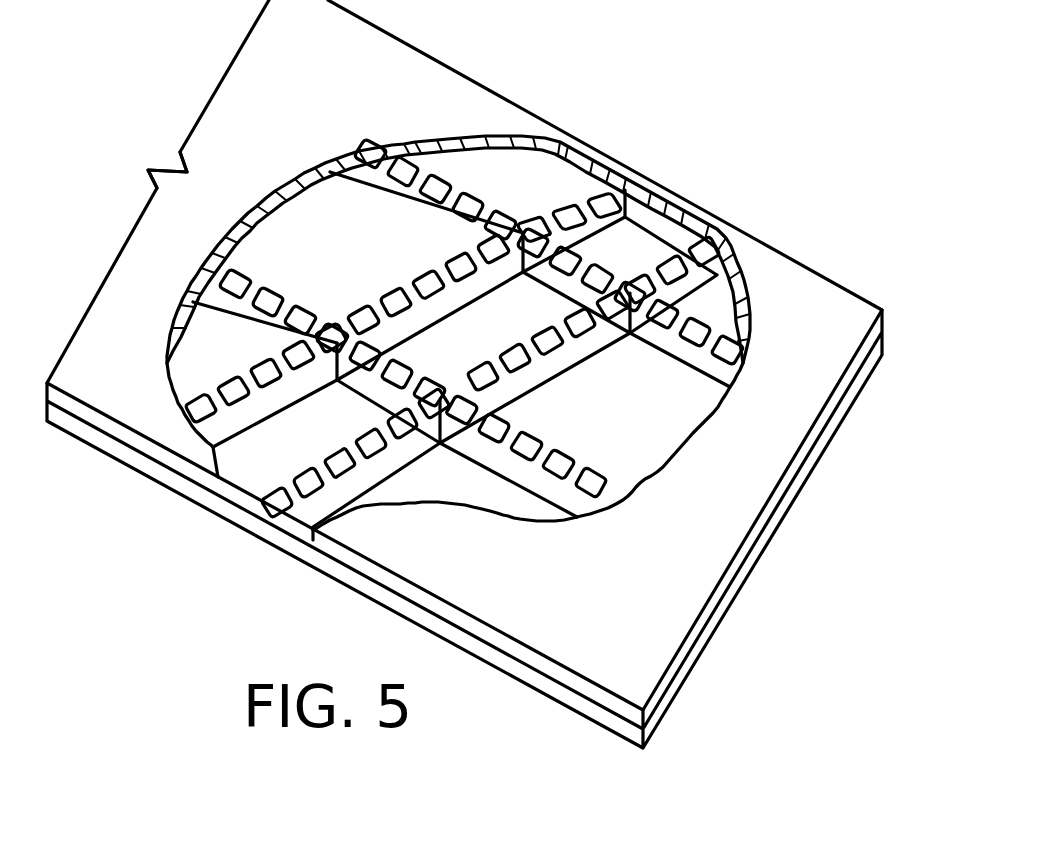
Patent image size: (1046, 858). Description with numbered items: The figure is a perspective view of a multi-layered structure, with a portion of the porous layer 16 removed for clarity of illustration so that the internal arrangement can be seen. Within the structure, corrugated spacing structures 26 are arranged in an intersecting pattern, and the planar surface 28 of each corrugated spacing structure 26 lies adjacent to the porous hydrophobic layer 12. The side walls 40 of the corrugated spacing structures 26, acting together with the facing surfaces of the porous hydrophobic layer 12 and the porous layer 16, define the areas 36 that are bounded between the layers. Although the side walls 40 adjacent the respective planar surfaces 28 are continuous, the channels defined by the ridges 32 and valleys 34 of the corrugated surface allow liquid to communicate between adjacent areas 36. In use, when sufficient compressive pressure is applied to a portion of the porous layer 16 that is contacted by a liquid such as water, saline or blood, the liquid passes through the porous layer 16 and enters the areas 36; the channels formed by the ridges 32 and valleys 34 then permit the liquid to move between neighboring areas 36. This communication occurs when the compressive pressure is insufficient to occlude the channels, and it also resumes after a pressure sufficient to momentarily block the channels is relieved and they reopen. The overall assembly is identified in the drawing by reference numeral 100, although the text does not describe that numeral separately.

The assembly 100 is at (711, 137).
The porous hydrophobic layer 12 is at (381, 594).
The porous layer 16 is at (118, 302).
The corrugated spacing structures 26 is at (258, 248).
The planar surface 28 is at (548, 383).
The ridges 32 is at (408, 190).
The valleys 34 is at (445, 234).
The areas 36 is at (490, 350).
The side walls 40 is at (403, 283).